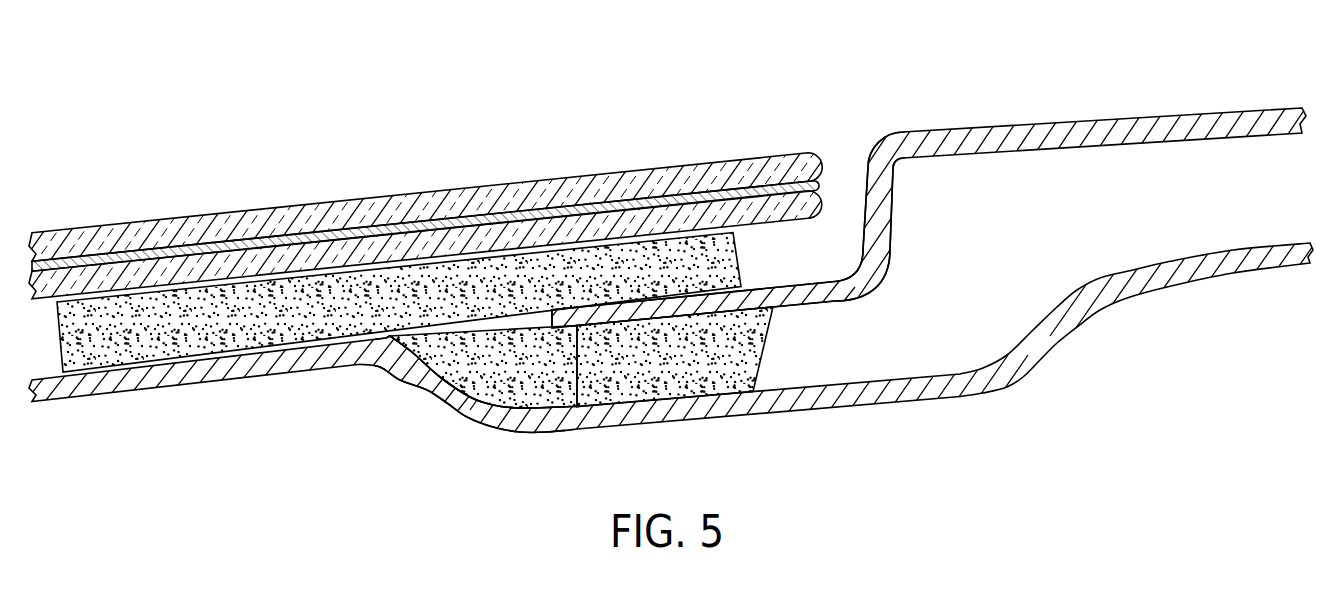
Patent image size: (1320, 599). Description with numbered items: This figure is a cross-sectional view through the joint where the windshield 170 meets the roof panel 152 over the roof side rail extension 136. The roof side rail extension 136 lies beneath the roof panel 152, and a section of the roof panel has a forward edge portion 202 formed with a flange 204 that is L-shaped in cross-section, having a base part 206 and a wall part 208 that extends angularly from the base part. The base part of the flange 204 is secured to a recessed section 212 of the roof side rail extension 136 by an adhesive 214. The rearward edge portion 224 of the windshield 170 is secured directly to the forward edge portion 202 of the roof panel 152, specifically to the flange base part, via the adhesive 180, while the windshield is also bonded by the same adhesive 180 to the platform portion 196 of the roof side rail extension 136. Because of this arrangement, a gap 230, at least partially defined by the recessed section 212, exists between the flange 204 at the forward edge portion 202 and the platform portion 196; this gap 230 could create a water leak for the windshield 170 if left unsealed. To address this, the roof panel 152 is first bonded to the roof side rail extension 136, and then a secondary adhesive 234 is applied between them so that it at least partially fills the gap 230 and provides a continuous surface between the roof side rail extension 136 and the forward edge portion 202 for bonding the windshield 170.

The roof side rail extension 136 is at (1150, 303).
The roof panel 152 is at (1178, 112).
The windshield 170 is at (513, 180).
The adhesive 180 is at (250, 328).
The platform portion 196 is at (143, 392).
The forward edge portion 202 is at (927, 129).
The flange 204 is at (781, 285).
The base part 206 is at (803, 307).
The wall part 208 is at (894, 228).
The recessed section 212 is at (856, 405).
The adhesive 214 is at (690, 364).
The rearward edge portion 224 is at (733, 157).
The gap 230 is at (390, 337).
The secondary adhesive 234 is at (503, 372).